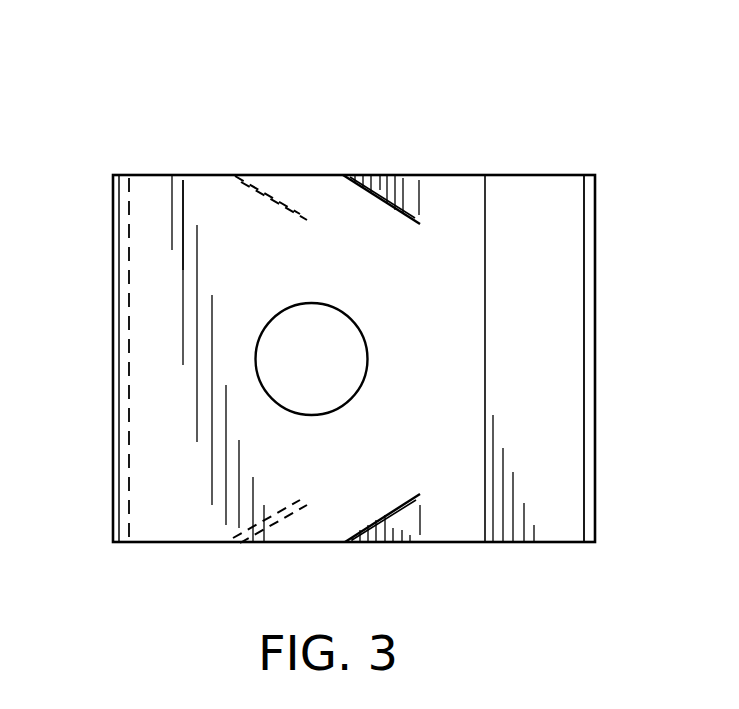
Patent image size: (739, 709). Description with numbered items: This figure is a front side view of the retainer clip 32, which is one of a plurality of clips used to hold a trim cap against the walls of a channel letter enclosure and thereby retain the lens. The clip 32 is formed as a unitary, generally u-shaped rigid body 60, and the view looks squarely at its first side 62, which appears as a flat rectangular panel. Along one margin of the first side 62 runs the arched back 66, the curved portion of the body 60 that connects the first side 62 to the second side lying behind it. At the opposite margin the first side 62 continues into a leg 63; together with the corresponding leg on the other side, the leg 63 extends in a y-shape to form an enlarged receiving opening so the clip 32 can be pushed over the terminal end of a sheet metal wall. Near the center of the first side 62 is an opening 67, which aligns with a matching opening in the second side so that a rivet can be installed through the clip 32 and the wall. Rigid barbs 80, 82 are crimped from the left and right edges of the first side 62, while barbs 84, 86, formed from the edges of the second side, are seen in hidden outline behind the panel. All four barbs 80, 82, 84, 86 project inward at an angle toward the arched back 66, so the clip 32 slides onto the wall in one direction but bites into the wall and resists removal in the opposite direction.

The retainer clip 32 is at (456, 108).
The u-shaped rigid body 60 is at (186, 180).
The first side 62 is at (216, 200).
The leg 63 is at (538, 198).
The arched back 66 is at (113, 318).
The opening 67 is at (321, 414).
The rigid barb 80 is at (382, 187).
The rigid barb 82 is at (384, 538).
The rigid barb 84 is at (275, 186).
The rigid barb 86 is at (279, 538).